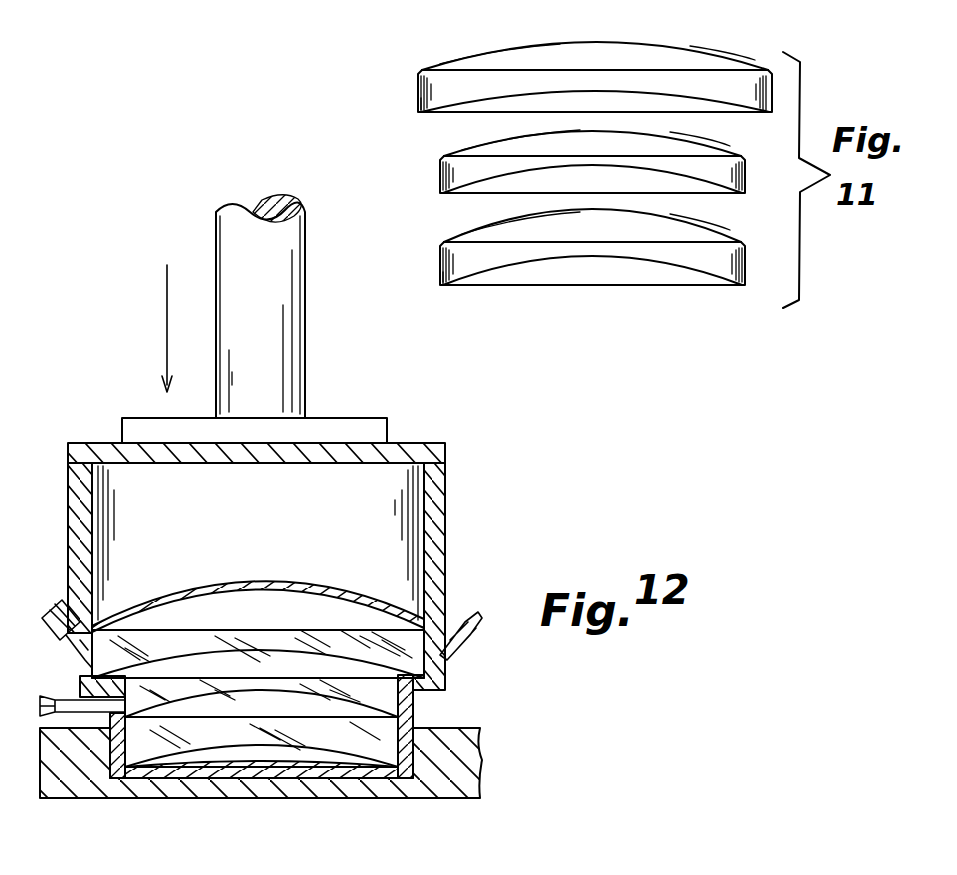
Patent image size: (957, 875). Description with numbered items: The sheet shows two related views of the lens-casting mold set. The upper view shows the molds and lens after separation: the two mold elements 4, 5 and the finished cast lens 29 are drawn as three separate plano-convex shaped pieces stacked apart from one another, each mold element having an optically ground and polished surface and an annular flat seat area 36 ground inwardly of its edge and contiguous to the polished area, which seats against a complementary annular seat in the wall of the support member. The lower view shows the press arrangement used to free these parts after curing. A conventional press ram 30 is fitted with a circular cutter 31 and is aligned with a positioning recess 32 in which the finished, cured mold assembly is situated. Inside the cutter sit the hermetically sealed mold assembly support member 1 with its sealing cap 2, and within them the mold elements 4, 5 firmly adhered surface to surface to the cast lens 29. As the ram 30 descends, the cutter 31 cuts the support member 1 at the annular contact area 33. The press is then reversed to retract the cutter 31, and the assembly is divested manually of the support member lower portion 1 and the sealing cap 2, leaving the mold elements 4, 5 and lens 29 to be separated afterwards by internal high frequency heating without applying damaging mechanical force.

In FIG. 12, the mold assembly support member 1 is at (418, 712).
In FIG. 12, the sealing cap 2 is at (272, 590).
In FIG. 11, the mold element 4 is at (438, 260).
In FIG. 11, the mold element 5 is at (417, 80).
In FIG. 12, the mold element 5 is at (258, 654).
In FIG. 11, the finished cast lens 29 is at (442, 180).
In FIG. 12, the press ram 30 is at (308, 373).
In FIG. 12, the circular cutter 31 is at (453, 553).
In FIG. 12, the positioning recess 32 is at (422, 763).
In FIG. 12, the annular contact area 33 is at (456, 613).
In FIG. 11, the annular flat seat area 36 is at (424, 114).